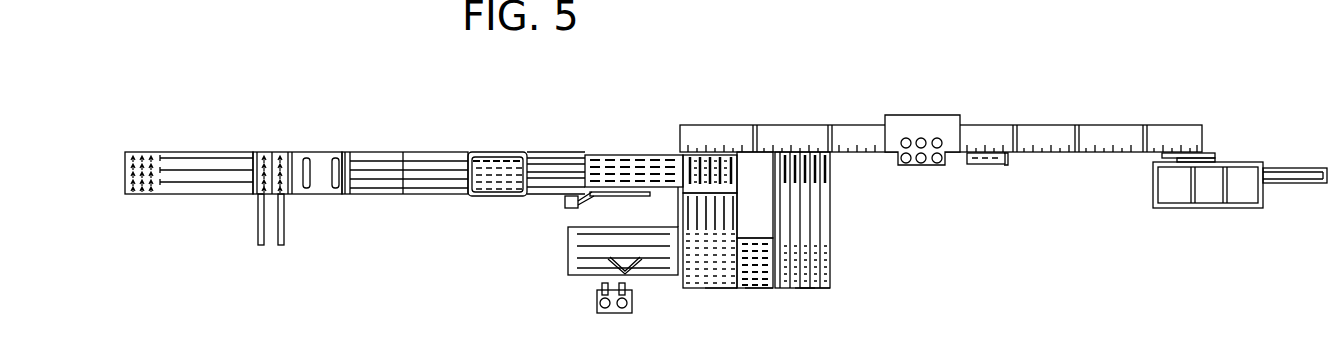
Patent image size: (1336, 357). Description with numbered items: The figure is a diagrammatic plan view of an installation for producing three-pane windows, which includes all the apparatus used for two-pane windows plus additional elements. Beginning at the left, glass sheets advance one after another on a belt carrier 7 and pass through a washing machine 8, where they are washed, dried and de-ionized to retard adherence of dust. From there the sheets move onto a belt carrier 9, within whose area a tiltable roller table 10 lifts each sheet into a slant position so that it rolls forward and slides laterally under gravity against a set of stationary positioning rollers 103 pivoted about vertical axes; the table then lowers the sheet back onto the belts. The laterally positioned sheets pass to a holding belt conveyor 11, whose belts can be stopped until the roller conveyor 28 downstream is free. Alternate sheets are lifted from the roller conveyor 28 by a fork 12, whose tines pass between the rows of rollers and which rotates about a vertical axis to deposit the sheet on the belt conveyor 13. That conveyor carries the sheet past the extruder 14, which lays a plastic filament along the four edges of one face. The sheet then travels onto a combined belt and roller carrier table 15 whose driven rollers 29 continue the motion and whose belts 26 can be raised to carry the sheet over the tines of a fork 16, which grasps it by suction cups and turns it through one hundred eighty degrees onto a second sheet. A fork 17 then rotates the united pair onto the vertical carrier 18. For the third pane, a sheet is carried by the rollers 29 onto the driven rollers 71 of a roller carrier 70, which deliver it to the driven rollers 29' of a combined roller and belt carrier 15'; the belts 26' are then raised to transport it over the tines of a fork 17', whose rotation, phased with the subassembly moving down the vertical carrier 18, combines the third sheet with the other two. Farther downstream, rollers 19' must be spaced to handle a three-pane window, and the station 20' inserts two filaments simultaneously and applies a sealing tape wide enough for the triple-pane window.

The belt carrier 7 is at (178, 150).
The washing machine 8 is at (302, 150).
The belt carrier 9 is at (422, 150).
The tiltable roller table 10 is at (498, 150).
The stationary positioning rollers 103 is at (486, 152).
The holding belt conveyor 11 is at (563, 150).
The roller conveyor 28 is at (638, 153).
The fork 17 is at (727, 173).
The fork 16 is at (737, 212).
The combined belt and roller carrier table 15 is at (697, 270).
The belts 26 is at (690, 273).
The driven rollers 29 is at (721, 307).
The roller carrier 70 is at (752, 292).
The driven rollers 71 is at (762, 292).
The fork 17' is at (828, 220).
The combined roller and belt carrier 15' is at (837, 220).
The belts 26' is at (843, 281).
The driven rollers 29' is at (830, 308).
The vertical carrier 18 is at (700, 123).
The rollers 19' is at (931, 119).
The station 20' is at (1240, 157).
The fork 12 is at (600, 198).
The belt conveyor 13 is at (568, 257).
The extruder 14 is at (596, 300).